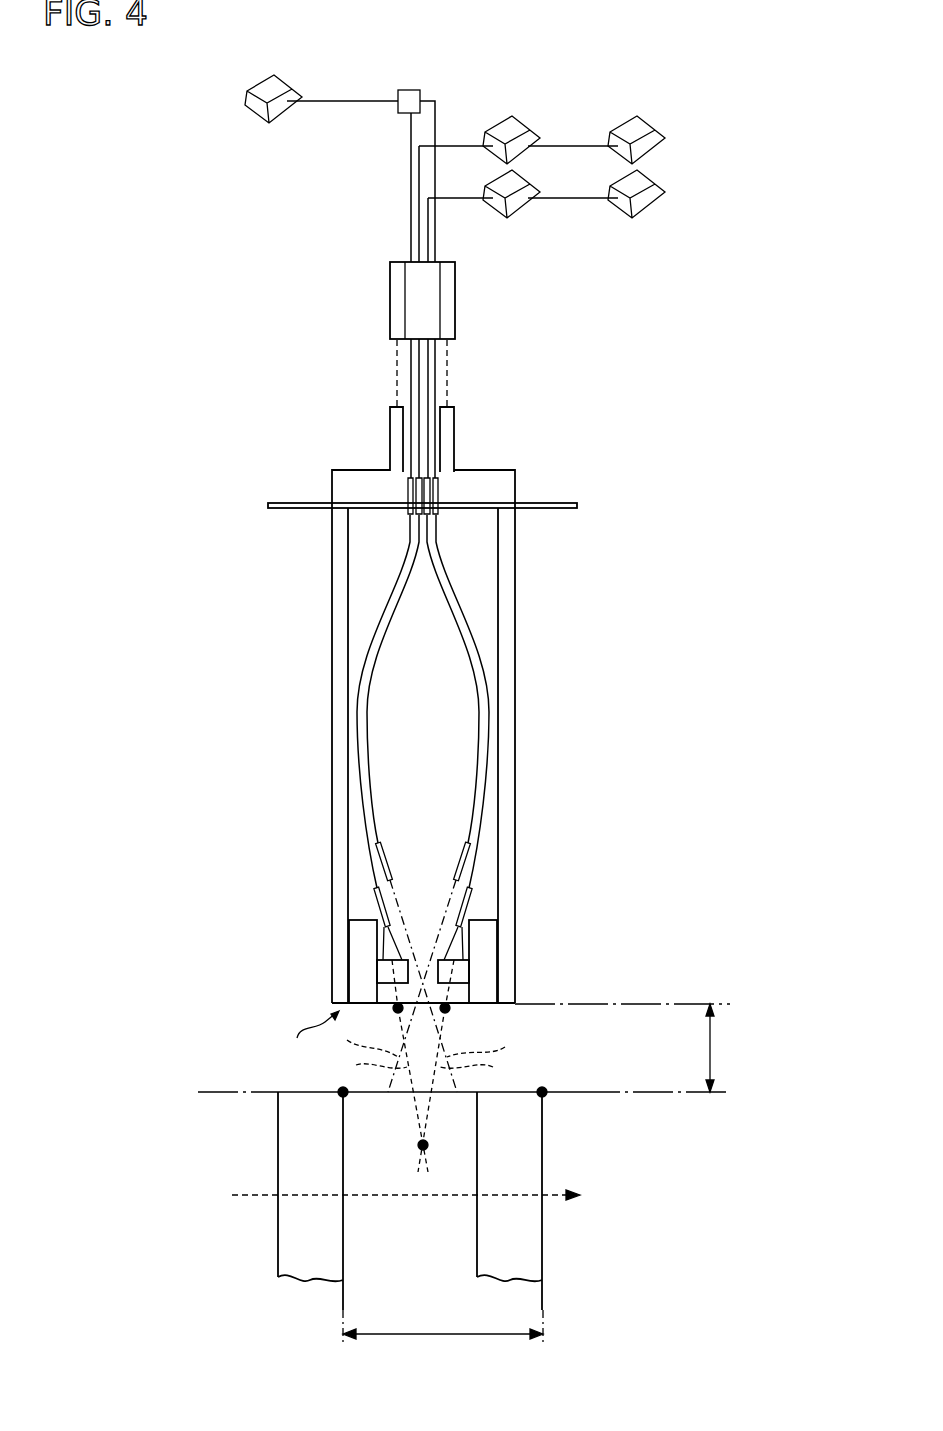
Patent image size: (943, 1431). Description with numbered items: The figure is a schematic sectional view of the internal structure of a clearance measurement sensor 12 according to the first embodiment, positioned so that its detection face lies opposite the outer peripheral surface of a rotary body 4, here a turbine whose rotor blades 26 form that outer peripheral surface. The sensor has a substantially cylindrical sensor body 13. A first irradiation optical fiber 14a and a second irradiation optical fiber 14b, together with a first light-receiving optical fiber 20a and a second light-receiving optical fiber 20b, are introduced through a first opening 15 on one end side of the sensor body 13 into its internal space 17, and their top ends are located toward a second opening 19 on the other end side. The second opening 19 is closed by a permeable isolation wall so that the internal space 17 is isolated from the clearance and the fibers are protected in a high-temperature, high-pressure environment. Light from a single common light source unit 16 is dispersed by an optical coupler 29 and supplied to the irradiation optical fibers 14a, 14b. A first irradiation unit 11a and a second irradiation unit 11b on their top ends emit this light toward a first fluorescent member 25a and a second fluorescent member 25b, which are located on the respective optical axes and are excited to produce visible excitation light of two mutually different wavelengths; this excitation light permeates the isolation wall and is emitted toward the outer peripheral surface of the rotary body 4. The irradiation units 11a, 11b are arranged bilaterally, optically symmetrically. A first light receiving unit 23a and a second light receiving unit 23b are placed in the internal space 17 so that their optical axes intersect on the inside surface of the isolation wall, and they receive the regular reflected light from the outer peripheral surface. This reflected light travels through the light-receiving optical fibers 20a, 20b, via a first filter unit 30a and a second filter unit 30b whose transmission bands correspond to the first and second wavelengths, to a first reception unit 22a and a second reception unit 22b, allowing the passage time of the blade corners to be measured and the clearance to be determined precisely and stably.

The light source unit 16 is at (255, 82).
The optical coupler 29 is at (405, 88).
The first irradiation optical fiber 14a is at (411, 134).
The second irradiation optical fiber 14b is at (437, 125).
The first light-receiving optical fiber 20a is at (430, 242).
The second light-receiving optical fiber 20b is at (419, 242).
The first filter unit 30a is at (523, 203).
The second filter unit 30b is at (528, 117).
The first reception unit 22a is at (653, 203).
The second reception unit 22b is at (650, 117).
The first opening 15 is at (454, 420).
The clearance measurement sensor 12 is at (502, 467).
The internal space 17 is at (483, 537).
The sensor body 13 is at (515, 617).
The first light receiving unit 23a is at (470, 855).
The second light receiving unit 23b is at (378, 858).
The first irradiation unit 11a is at (376, 902).
The second irradiation unit 11b is at (468, 902).
The second opening 19 is at (348, 943).
The first fluorescent member 25a is at (383, 972).
The second fluorescent member 25b is at (430, 1123).
The rotary body 4 is at (604, 1079).
The rotor blades 26 is at (343, 1243).